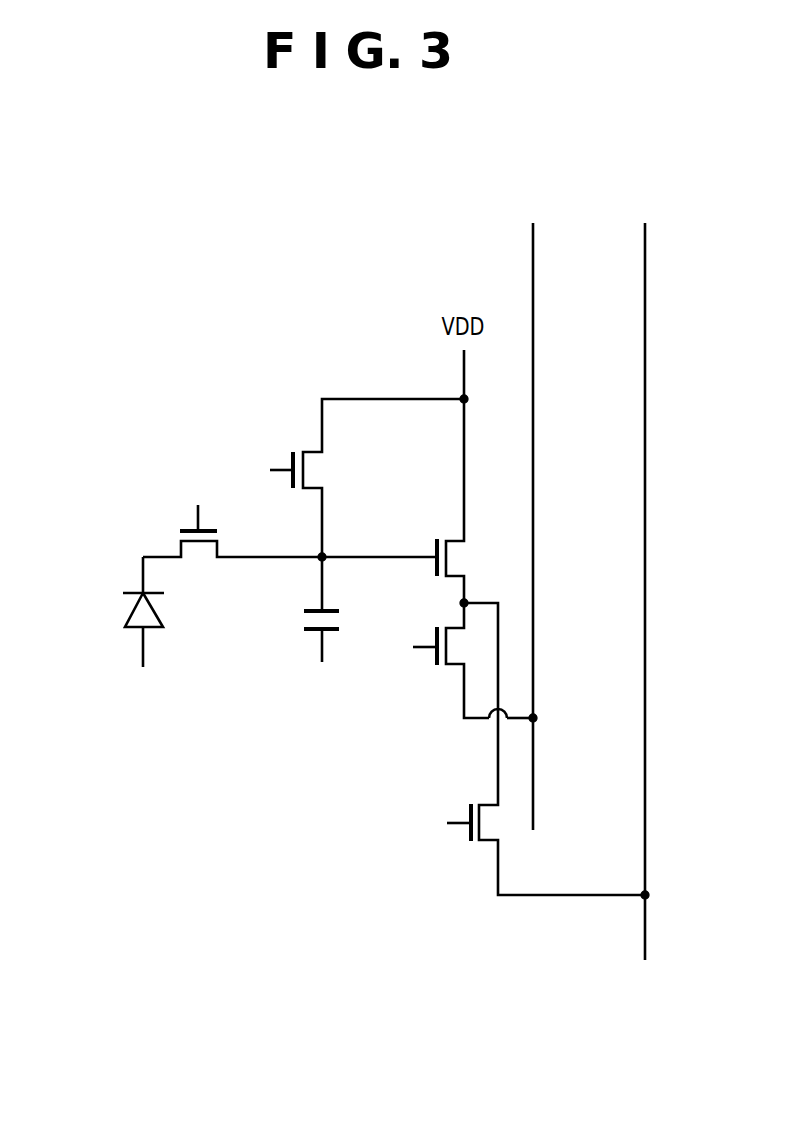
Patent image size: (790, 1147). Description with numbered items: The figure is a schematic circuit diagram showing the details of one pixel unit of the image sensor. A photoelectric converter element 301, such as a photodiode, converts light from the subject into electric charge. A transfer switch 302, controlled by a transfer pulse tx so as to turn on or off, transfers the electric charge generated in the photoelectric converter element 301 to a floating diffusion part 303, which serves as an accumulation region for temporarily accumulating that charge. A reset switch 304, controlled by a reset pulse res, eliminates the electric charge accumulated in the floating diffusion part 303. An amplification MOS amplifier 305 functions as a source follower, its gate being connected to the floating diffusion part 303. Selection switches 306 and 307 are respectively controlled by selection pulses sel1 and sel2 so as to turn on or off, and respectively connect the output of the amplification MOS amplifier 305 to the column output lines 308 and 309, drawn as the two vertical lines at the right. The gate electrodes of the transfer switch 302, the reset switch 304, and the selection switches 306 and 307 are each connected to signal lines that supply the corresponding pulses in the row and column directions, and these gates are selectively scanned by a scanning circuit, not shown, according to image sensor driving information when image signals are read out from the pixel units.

The photoelectric converter element 301 is at (132, 612).
The transfer switch 302 is at (177, 540).
The floating diffusion part 303 is at (302, 621).
The reset switch 304 is at (285, 458).
The amplification MOS amplifier 305 is at (430, 543).
The selection switch 306 is at (430, 658).
The selection switch 307 is at (463, 837).
The column output line 308 is at (534, 538).
The column output line 309 is at (645, 538).